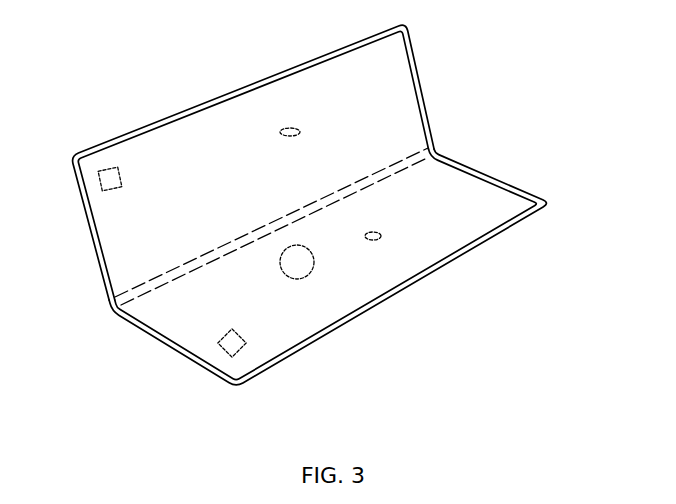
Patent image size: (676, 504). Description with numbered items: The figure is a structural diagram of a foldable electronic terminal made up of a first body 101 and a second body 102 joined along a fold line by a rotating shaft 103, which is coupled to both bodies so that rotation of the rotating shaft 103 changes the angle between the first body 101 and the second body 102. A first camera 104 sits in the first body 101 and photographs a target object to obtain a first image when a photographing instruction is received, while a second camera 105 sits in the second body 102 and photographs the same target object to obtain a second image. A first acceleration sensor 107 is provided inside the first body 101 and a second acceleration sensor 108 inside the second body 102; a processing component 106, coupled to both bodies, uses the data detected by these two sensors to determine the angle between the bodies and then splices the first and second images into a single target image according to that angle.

The first body 101 is at (348, 115).
The second body 102 is at (430, 232).
The rotating shaft 103 is at (435, 153).
The first camera 104 is at (112, 173).
The second camera 105 is at (240, 347).
The processing component 106 is at (307, 277).
The first acceleration sensor 107 is at (280, 123).
The second acceleration sensor 108 is at (377, 240).